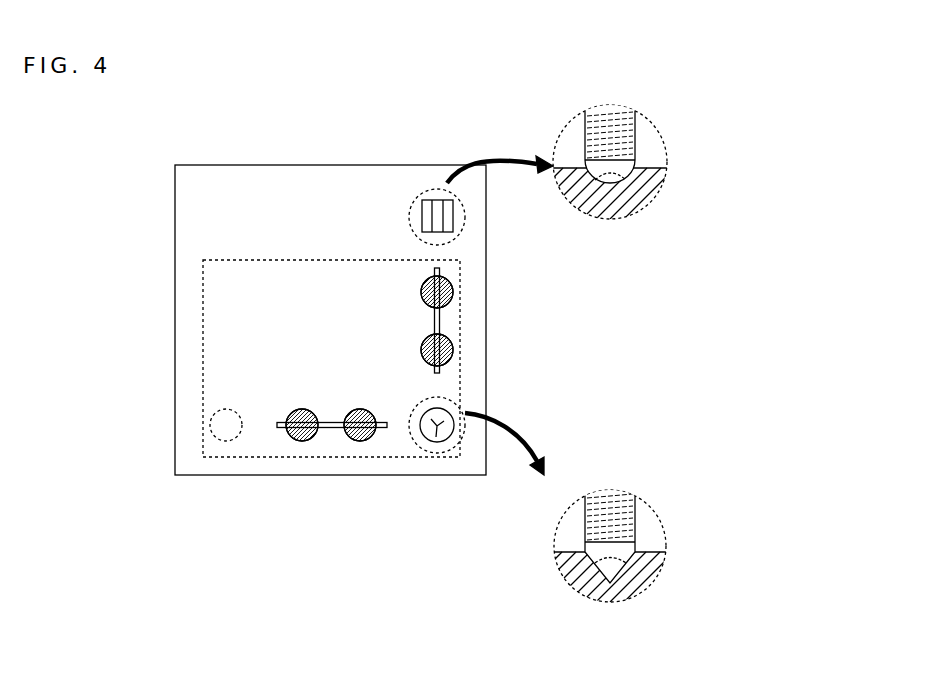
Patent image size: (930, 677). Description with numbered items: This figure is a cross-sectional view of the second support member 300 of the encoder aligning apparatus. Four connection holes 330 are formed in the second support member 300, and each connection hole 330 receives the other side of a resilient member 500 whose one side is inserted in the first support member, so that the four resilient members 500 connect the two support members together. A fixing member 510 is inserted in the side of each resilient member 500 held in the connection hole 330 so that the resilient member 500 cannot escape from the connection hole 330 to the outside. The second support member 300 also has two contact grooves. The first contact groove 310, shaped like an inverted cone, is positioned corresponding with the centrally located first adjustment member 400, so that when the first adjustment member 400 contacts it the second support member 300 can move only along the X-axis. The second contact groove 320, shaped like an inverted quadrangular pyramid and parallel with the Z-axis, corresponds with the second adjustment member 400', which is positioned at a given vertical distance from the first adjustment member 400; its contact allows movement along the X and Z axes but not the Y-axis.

The second support member 300 is at (176, 215).
The first contact groove 310 is at (437, 442).
The second contact groove 320 is at (437, 217).
The connection hole 330 is at (450, 284).
The first adjustment member 400 is at (661, 534).
The second adjustment member 400' is at (664, 141).
The resilient member 500 is at (447, 299).
The fixing member 510 is at (445, 330).